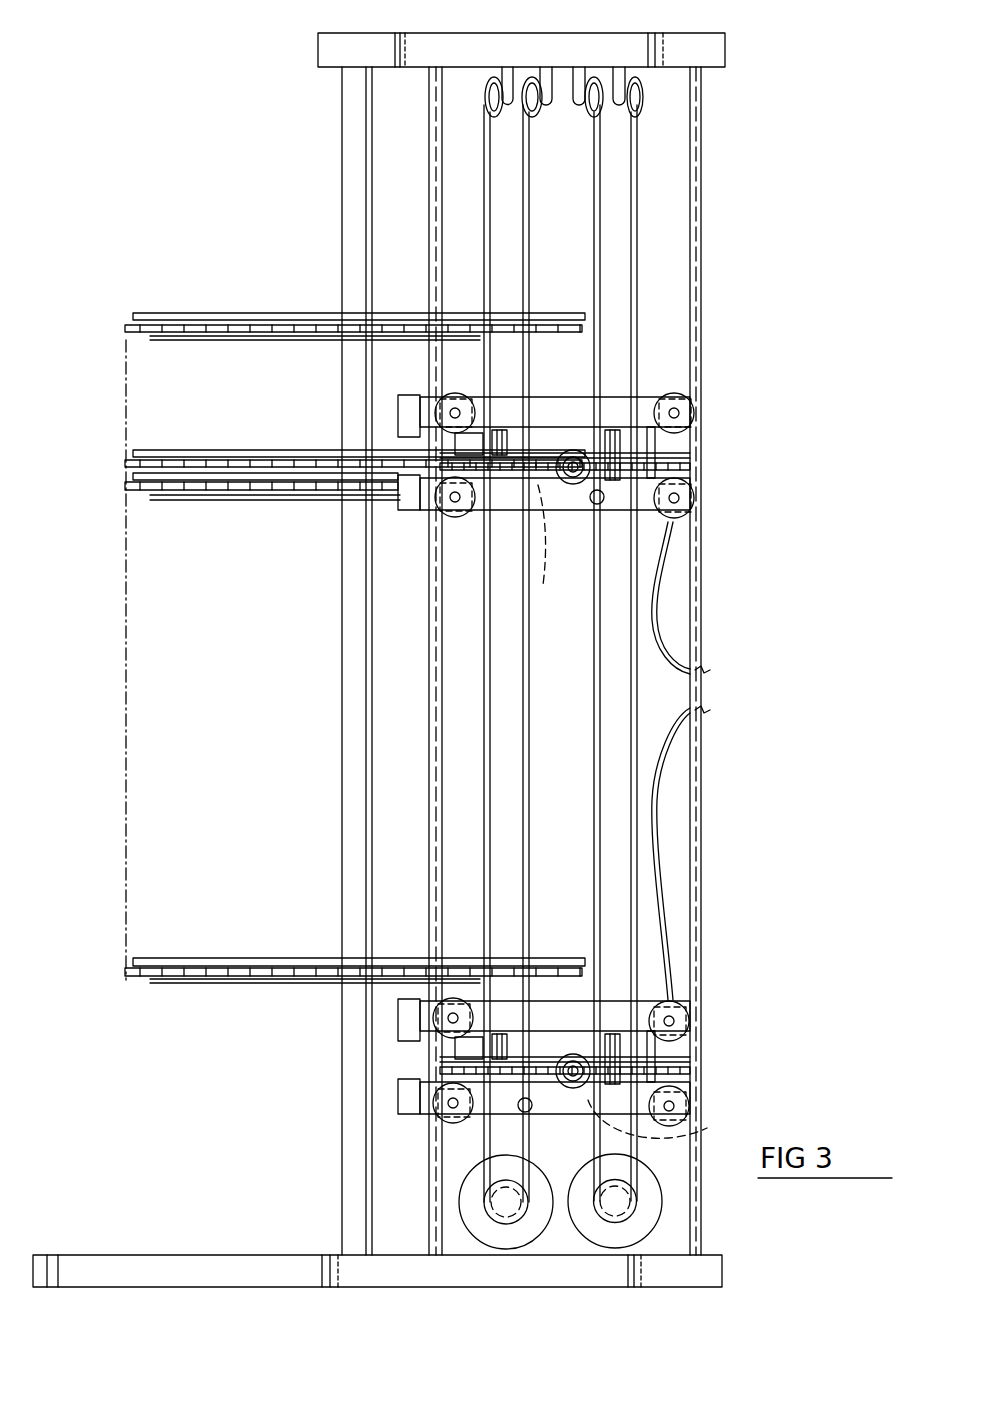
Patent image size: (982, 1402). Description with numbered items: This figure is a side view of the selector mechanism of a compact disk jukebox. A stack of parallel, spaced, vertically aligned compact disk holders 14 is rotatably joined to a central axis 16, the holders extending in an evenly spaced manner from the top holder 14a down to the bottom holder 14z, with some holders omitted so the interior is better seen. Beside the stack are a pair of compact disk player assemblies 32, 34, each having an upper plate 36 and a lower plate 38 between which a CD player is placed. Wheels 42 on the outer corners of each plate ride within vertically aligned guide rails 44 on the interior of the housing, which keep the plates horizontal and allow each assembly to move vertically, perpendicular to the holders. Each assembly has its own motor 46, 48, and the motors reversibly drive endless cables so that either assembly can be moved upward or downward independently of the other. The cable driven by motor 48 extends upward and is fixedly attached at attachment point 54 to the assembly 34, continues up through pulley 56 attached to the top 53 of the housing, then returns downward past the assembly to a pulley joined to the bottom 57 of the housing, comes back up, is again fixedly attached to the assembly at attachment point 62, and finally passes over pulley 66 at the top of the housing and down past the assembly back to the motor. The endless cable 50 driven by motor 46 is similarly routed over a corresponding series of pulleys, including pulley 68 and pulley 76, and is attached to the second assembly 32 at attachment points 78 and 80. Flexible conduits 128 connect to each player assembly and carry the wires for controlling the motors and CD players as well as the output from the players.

The compact disk holder 14 is at (150, 499).
The top holder 14a is at (148, 338).
The bottom holder 14z is at (143, 986).
The central axis 16 is at (340, 648).
The compact disk player assembly 32 is at (613, 397).
The compact disk player assembly 34 is at (640, 1004).
The upper plate 36 is at (548, 404).
The lower plate 38 is at (569, 508).
The wheel 42 is at (681, 405).
The guide rail 44 is at (427, 157).
The motor 46 is at (662, 1208).
The motor 48 is at (465, 1197).
The endless cable 50 is at (652, 848).
The top of the housing 53 is at (570, 44).
The attachment point 54 is at (520, 1111).
The pulley 56 is at (522, 72).
The bottom of the housing 57 is at (503, 1278).
The attachment point 62 is at (666, 1116).
The pulley 66 is at (487, 82).
The pulley 68 is at (602, 80).
The pulley 76 is at (642, 87).
The attachment point 78 is at (603, 500).
The attachment point 80 is at (557, 550).
The flexible conduit 128 is at (712, 706).